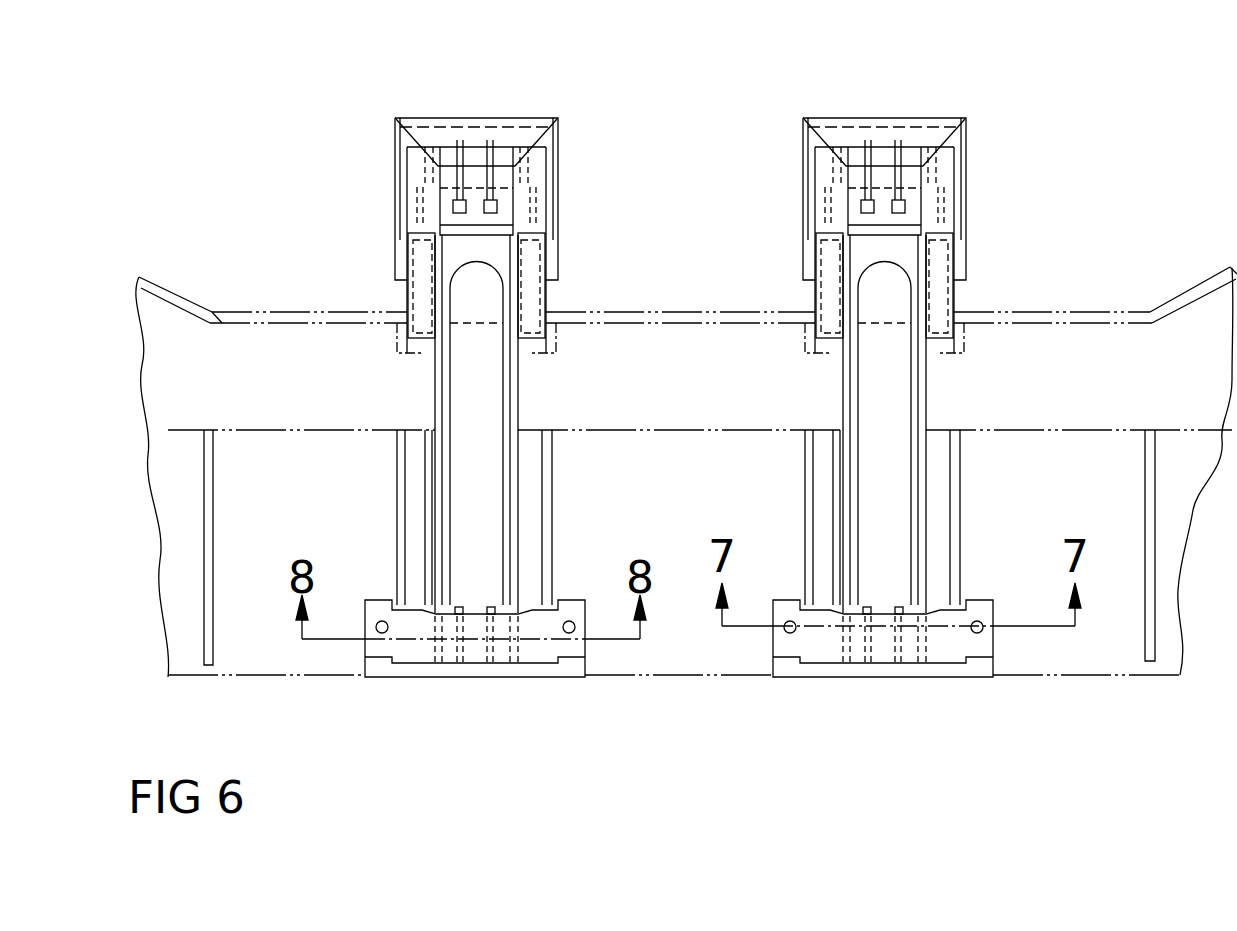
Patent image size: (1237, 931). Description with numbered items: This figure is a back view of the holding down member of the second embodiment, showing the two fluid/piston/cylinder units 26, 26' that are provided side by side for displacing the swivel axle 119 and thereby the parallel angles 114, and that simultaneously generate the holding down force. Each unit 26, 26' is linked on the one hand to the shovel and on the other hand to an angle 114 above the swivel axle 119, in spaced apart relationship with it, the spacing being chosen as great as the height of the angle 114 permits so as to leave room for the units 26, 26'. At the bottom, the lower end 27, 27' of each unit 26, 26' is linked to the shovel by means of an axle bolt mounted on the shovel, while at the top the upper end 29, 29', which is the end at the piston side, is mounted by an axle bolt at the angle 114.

The fluid/piston/cylinder unit 26 is at (415, 424).
The fluid/piston/cylinder unit 26' is at (953, 424).
The lower end 27 is at (475, 669).
The lower end 27' is at (883, 668).
The upper end 29 is at (524, 145).
The upper end 29' is at (906, 145).
The angle 114 is at (938, 128).
The swivel axle 119 is at (332, 639).